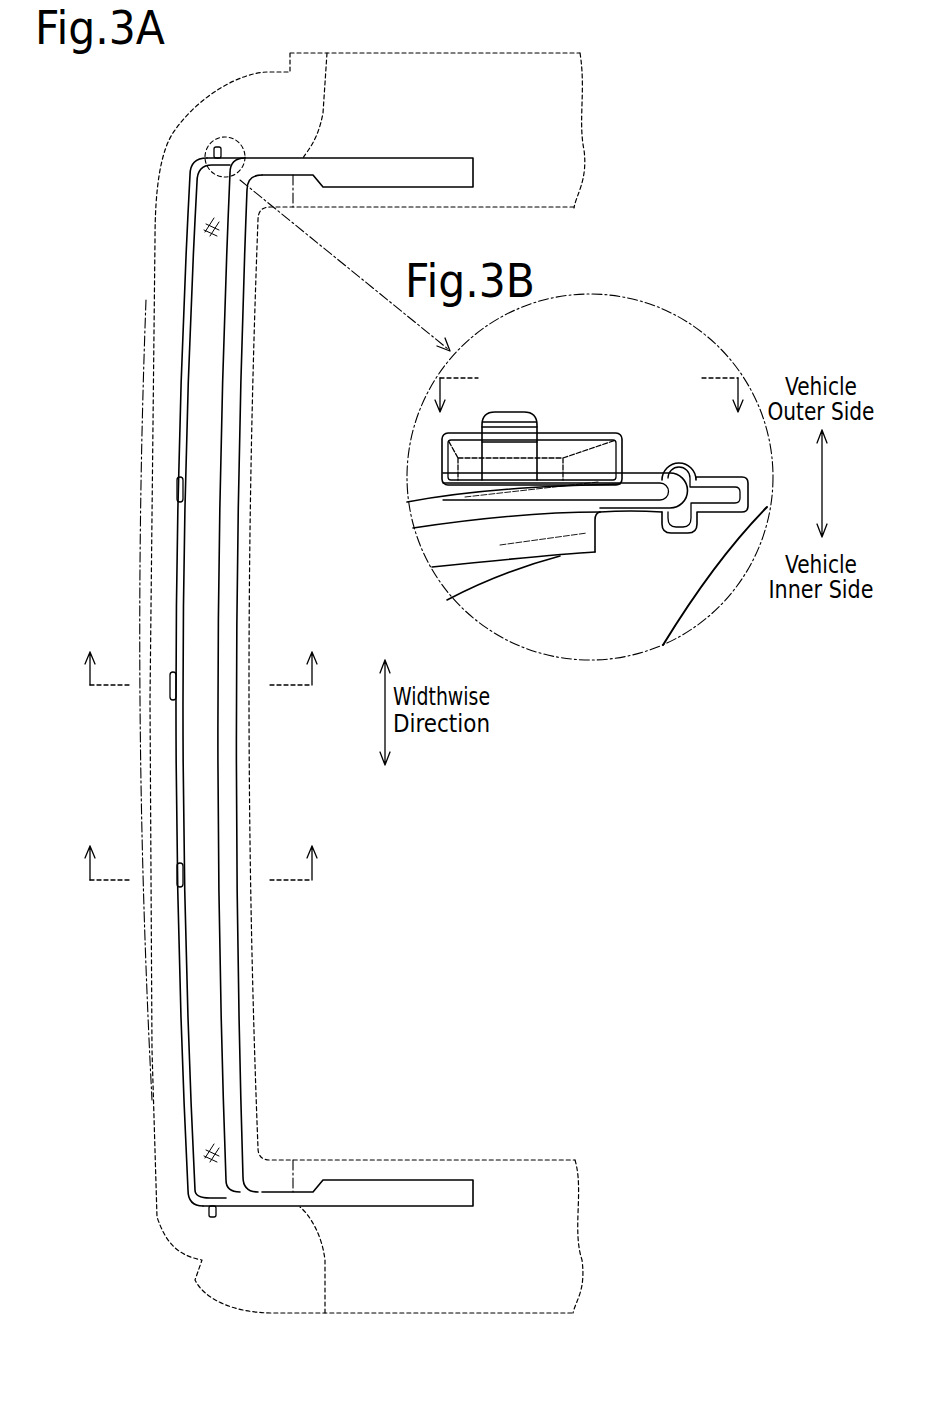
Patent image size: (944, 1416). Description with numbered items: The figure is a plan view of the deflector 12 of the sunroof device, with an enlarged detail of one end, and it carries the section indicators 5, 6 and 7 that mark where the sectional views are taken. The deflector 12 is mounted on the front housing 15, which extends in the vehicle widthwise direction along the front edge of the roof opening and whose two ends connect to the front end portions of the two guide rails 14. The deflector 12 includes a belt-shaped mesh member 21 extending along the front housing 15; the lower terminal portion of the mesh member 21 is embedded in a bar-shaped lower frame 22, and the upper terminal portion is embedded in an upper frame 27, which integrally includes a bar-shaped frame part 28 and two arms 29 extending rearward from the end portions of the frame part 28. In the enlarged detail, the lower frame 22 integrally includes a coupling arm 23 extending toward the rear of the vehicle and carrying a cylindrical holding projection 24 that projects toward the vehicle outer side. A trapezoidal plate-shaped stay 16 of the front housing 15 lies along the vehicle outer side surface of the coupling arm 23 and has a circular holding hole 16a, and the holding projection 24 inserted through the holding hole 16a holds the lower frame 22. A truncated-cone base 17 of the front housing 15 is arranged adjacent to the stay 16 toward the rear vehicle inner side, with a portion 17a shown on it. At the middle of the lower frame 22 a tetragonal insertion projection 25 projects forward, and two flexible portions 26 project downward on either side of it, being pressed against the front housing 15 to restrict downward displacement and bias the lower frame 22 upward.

In FIG. 3A, the deflector 12 is at (201, 682).
In FIG. 3A, the guide rail 14 is at (573, 209).
In FIG. 3A, the front housing 15 is at (143, 460).
In FIG. 3B, the stay 16 is at (540, 434).
In FIG. 3B, the holding hole 16a is at (556, 448).
In FIG. 3B, the base 17 is at (620, 516).
In FIG. 3B, the anchor portion 17a is at (665, 512).
In FIG. 3A, the mesh member 21 is at (190, 557).
In FIG. 3A, the lower frame 22 is at (178, 598).
In FIG. 3B, the lower frame 22 is at (532, 572).
In FIG. 3B, the coupling arm 23 is at (640, 492).
In FIG. 3B, the holding projection 24 is at (511, 412).
In FIG. 3A, the insertion projection 25 is at (165, 693).
In FIG. 3A, the flexible portion 26 is at (176, 487).
In FIG. 3A, the upper frame 27 is at (240, 585).
In FIG. 3A, the frame part 28 is at (240, 775).
In FIG. 3A, the arm 29 is at (406, 158).
In FIG. 3B, the section line 5- 5 is at (582, 415).
In FIG. 3A, the section line 6- 6 is at (202, 654).
In FIG. 3A, the section line 7- 7 is at (202, 844).